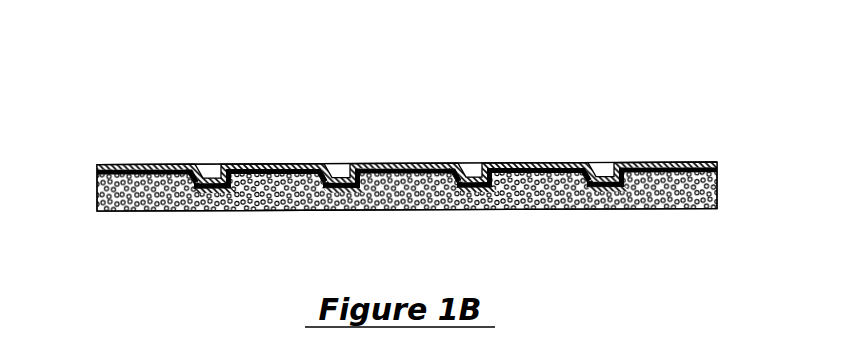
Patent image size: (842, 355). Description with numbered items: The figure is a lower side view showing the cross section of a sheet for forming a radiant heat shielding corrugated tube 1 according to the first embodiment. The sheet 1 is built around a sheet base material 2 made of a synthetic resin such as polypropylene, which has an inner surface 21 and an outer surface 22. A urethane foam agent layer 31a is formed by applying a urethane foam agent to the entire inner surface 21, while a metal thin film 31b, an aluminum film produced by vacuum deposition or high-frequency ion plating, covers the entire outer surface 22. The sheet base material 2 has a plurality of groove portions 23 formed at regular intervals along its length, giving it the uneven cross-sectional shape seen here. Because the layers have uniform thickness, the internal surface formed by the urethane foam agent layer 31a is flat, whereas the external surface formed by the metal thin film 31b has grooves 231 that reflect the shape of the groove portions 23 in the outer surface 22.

The sheet for forming a radiant heat shielding corrugated tube 1 is at (650, 97).
The corrugated tube-forming sheet base material 2 is at (534, 167).
The inner surface 21 is at (676, 177).
The outer surface 22 is at (675, 166).
The groove portions 23 is at (201, 191).
The grooves 231 is at (209, 170).
The urethane foam agent layer 31a is at (401, 192).
The metal thin film 31b is at (402, 166).